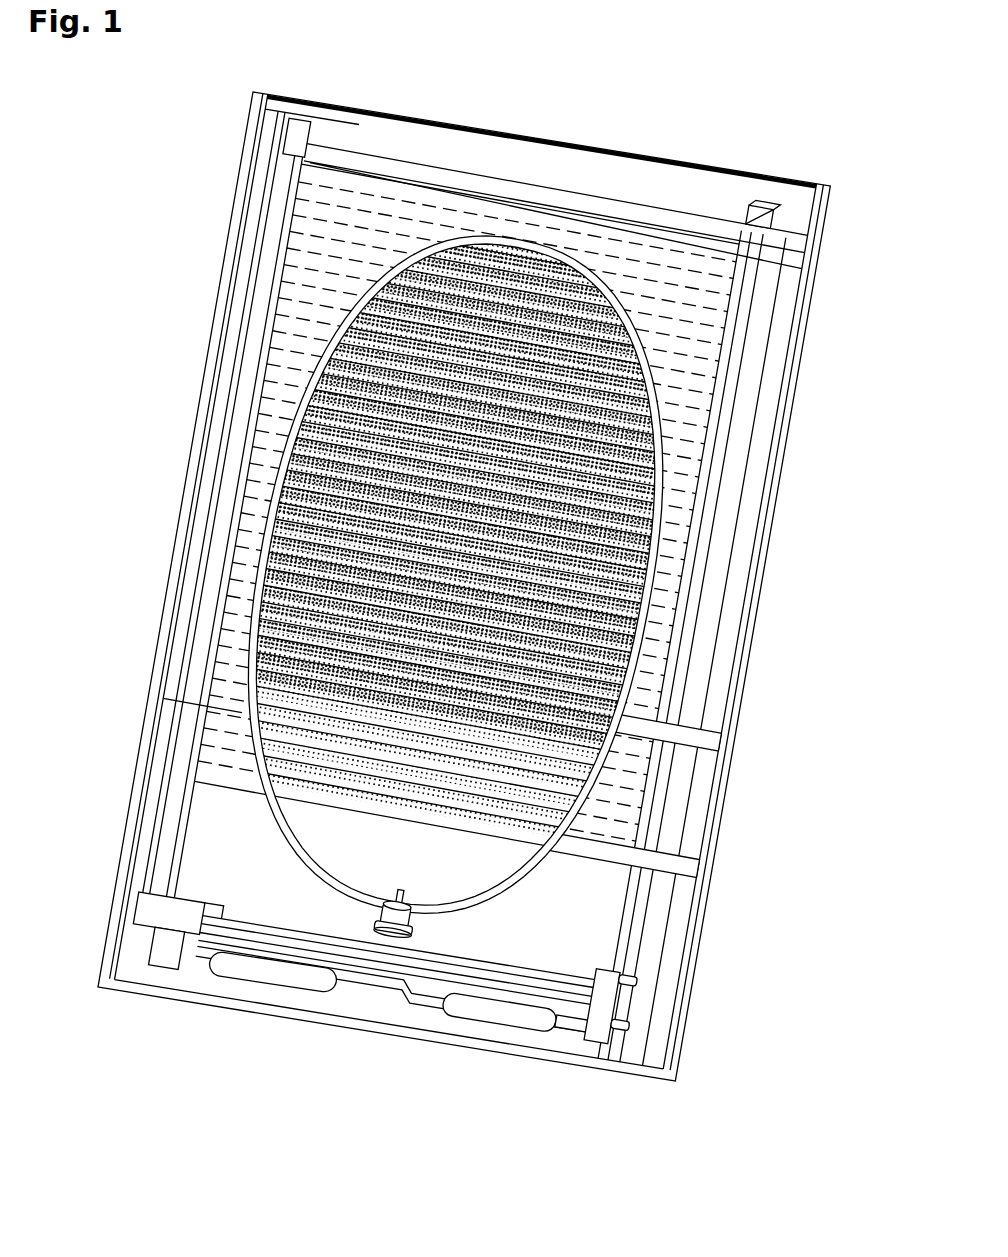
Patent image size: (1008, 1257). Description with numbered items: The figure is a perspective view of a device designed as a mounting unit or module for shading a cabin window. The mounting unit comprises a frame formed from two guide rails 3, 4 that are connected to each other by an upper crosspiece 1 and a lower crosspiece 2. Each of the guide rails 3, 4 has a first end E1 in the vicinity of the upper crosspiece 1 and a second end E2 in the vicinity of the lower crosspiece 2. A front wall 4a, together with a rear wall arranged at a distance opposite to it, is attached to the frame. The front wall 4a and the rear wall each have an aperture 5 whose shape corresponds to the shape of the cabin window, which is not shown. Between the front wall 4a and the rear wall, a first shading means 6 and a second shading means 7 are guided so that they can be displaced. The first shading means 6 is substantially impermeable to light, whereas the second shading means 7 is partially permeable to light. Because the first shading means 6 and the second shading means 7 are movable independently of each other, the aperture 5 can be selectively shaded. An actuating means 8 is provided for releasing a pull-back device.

The upper crosspiece 1 is at (791, 243).
The lower crosspiece 2 is at (398, 988).
The guide rail 3 is at (686, 944).
The guide rail 4 is at (135, 835).
The front wall 4a is at (568, 922).
The aperture 5 is at (450, 866).
The first shading means 6 is at (385, 398).
The second shading means 7 is at (355, 745).
The actuating means 8 is at (390, 942).
The first end E1 is at (847, 252).
The second end E2 is at (723, 1020).